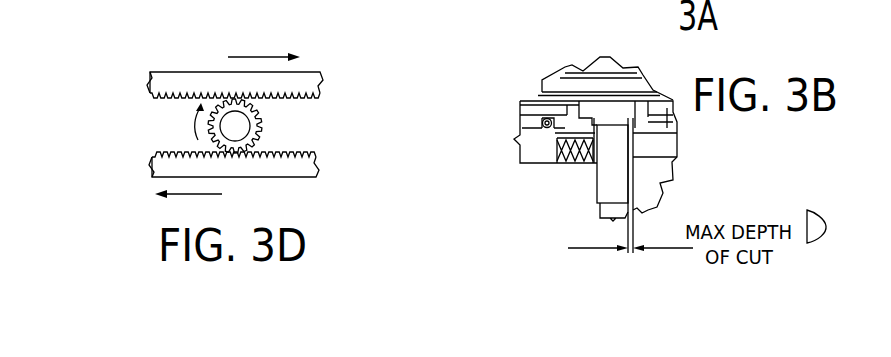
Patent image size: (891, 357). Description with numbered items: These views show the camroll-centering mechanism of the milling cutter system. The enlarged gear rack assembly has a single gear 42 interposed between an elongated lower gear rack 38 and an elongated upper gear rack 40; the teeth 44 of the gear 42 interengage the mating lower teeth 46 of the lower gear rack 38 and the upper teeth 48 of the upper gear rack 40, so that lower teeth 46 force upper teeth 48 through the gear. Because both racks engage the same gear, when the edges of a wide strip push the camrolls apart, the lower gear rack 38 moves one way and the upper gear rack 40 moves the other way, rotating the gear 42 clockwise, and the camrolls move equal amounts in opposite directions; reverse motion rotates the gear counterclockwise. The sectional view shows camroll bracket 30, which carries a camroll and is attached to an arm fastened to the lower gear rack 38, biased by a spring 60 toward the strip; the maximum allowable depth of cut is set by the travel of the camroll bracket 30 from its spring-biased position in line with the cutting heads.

In FIG. 3B, the camroll bracket 30 is at (617, 140).
In FIG. 3A, the camroll bracket 30 is at (748, 0).
In FIG. 3B, the spring 60 is at (570, 156).
In FIG. 3D, the lower gear rack 38 is at (270, 170).
In FIG. 3D, the upper gear rack 40 is at (200, 82).
In FIG. 3D, the gear 42 is at (264, 118).
In FIG. 3D, the gear teeth 44 is at (263, 140).
In FIG. 3D, the lower teeth 46 is at (181, 152).
In FIG. 3D, the upper teeth 48 is at (176, 96).